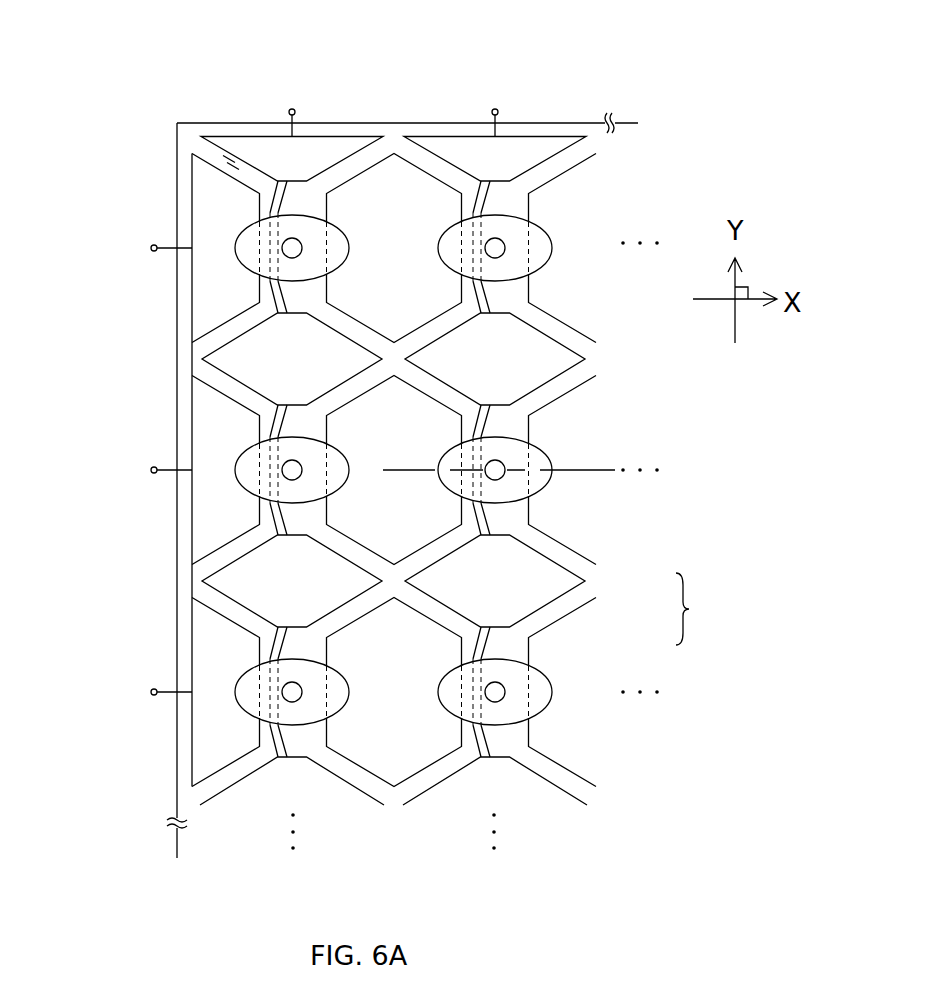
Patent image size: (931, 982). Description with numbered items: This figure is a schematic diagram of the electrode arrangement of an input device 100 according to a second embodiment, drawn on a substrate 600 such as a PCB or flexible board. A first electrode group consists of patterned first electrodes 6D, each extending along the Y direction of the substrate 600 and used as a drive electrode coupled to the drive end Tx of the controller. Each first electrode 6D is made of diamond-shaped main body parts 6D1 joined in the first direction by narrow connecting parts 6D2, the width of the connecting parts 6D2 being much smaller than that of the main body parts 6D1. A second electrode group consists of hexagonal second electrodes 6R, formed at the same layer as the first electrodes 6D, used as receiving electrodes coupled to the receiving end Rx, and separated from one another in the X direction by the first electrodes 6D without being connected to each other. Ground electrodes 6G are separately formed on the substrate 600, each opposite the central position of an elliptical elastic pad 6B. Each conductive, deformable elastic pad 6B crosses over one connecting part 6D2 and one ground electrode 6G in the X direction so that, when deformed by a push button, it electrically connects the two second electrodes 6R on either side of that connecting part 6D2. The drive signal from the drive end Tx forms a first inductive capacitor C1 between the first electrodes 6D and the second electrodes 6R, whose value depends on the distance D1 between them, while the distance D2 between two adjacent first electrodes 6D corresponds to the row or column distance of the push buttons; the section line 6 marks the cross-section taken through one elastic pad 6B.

The display device with touch detection function 100 is at (68, 104).
The substrate 600 is at (178, 581).
The first electrode 6D is at (459, 416).
The main body part 6D1 is at (548, 584).
The connecting part 6D2 is at (537, 640).
The second electrode 6R is at (192, 200).
The elastic pad 6B is at (241, 266).
The ground electrode 6G is at (284, 257).
The drive end Tx is at (393, 108).
The receiving end Rx is at (153, 469).
The first inductive capacitor C1 is at (226, 160).
The distance between the first electrodes and the second electrodes D1 is at (600, 210).
The distance between two adjacent first electrodes D2 is at (496, 78).
The section line 6-6' 6 is at (583, 455).